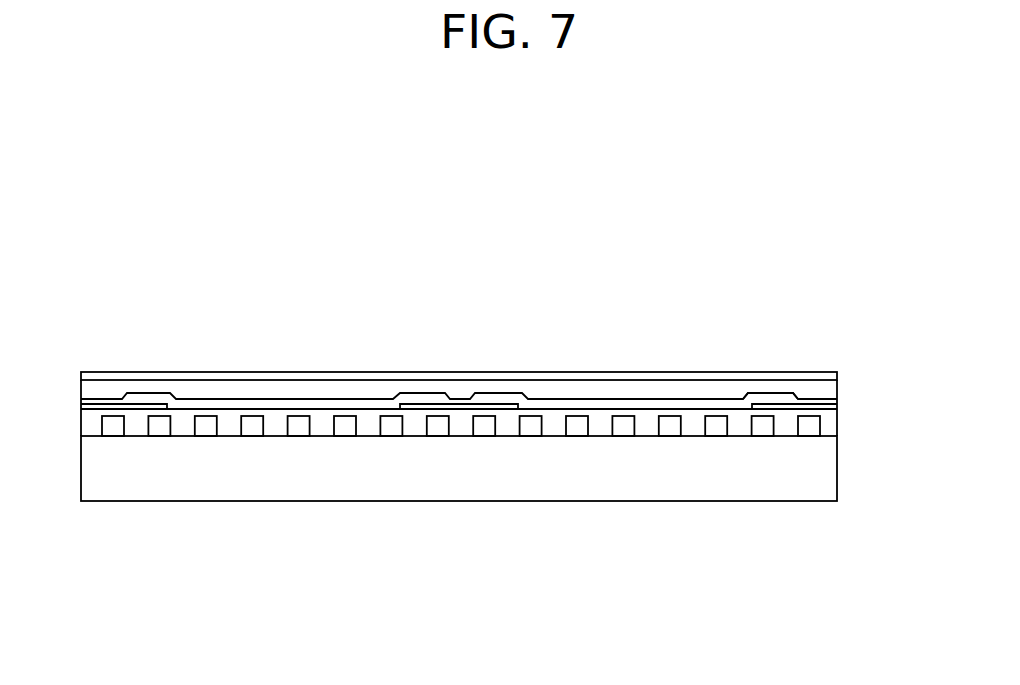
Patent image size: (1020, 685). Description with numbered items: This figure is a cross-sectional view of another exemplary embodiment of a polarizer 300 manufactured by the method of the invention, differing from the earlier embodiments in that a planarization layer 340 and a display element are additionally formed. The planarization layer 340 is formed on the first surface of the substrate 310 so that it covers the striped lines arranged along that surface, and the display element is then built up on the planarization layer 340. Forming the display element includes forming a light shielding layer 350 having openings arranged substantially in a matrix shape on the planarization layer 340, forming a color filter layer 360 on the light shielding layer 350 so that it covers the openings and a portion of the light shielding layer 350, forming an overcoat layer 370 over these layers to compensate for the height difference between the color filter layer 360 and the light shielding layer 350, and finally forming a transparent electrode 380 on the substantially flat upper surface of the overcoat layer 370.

The polarizer 300 is at (505, 204).
The substrate 310 is at (840, 468).
The planarization layer 340 is at (496, 486).
The light shielding layer 350 is at (837, 408).
The color filter layer 360 is at (777, 397).
The overcoat layer 370 is at (837, 397).
The transparent electrode 380 is at (837, 377).